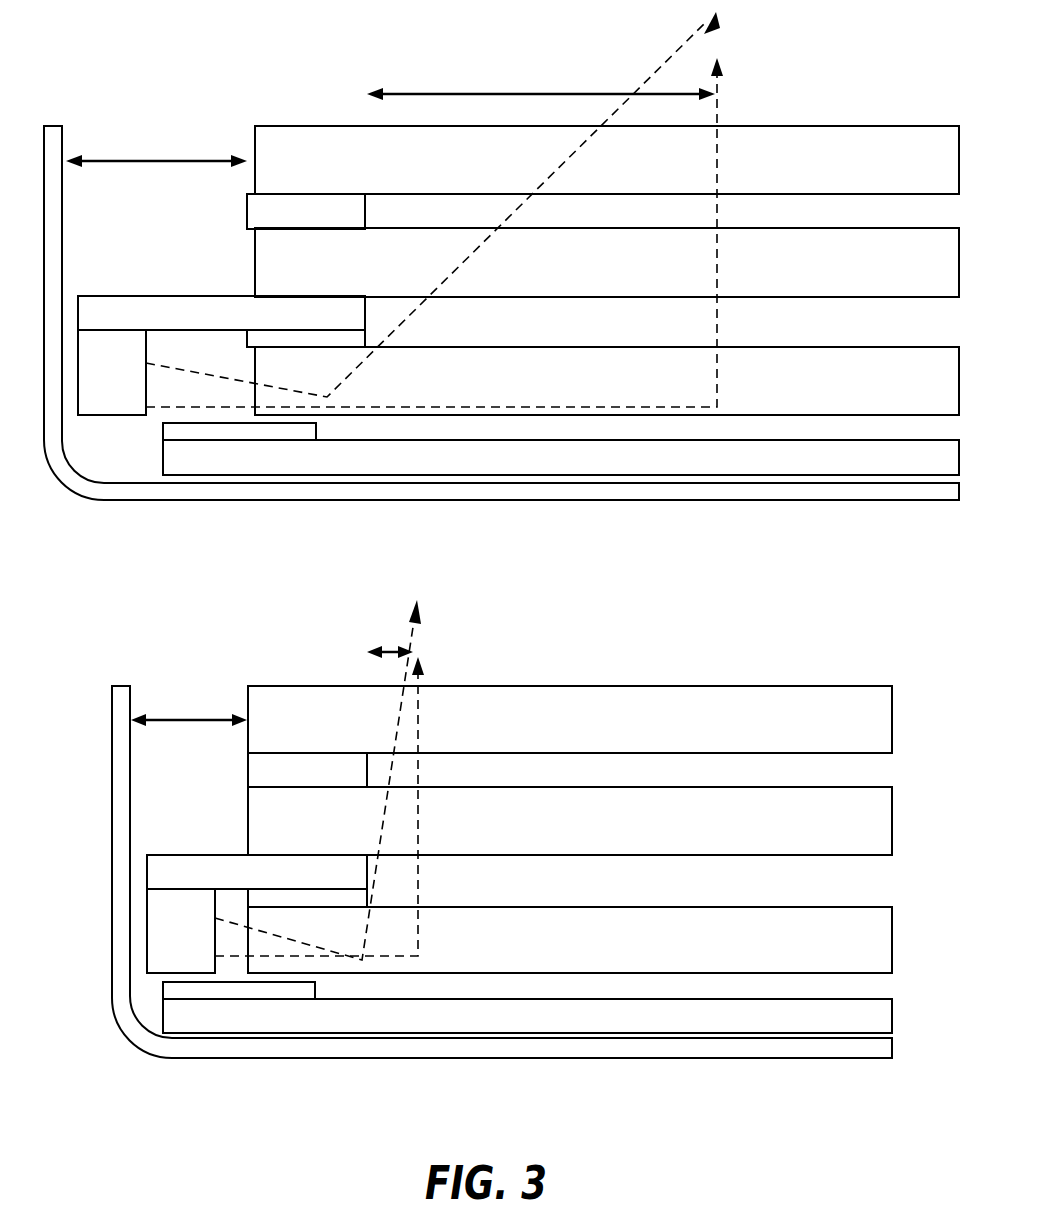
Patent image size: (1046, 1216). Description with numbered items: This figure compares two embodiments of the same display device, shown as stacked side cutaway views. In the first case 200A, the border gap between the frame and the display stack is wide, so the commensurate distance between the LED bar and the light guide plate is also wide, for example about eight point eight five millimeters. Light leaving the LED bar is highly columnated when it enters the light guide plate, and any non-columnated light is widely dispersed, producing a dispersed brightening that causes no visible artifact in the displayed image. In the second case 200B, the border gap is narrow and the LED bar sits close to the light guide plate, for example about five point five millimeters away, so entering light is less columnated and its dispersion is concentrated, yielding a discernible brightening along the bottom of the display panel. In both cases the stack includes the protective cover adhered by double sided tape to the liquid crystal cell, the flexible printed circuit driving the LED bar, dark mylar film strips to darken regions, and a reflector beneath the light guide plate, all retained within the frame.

The first case 200A is at (501, 302).
The second case 200B is at (489, 867).